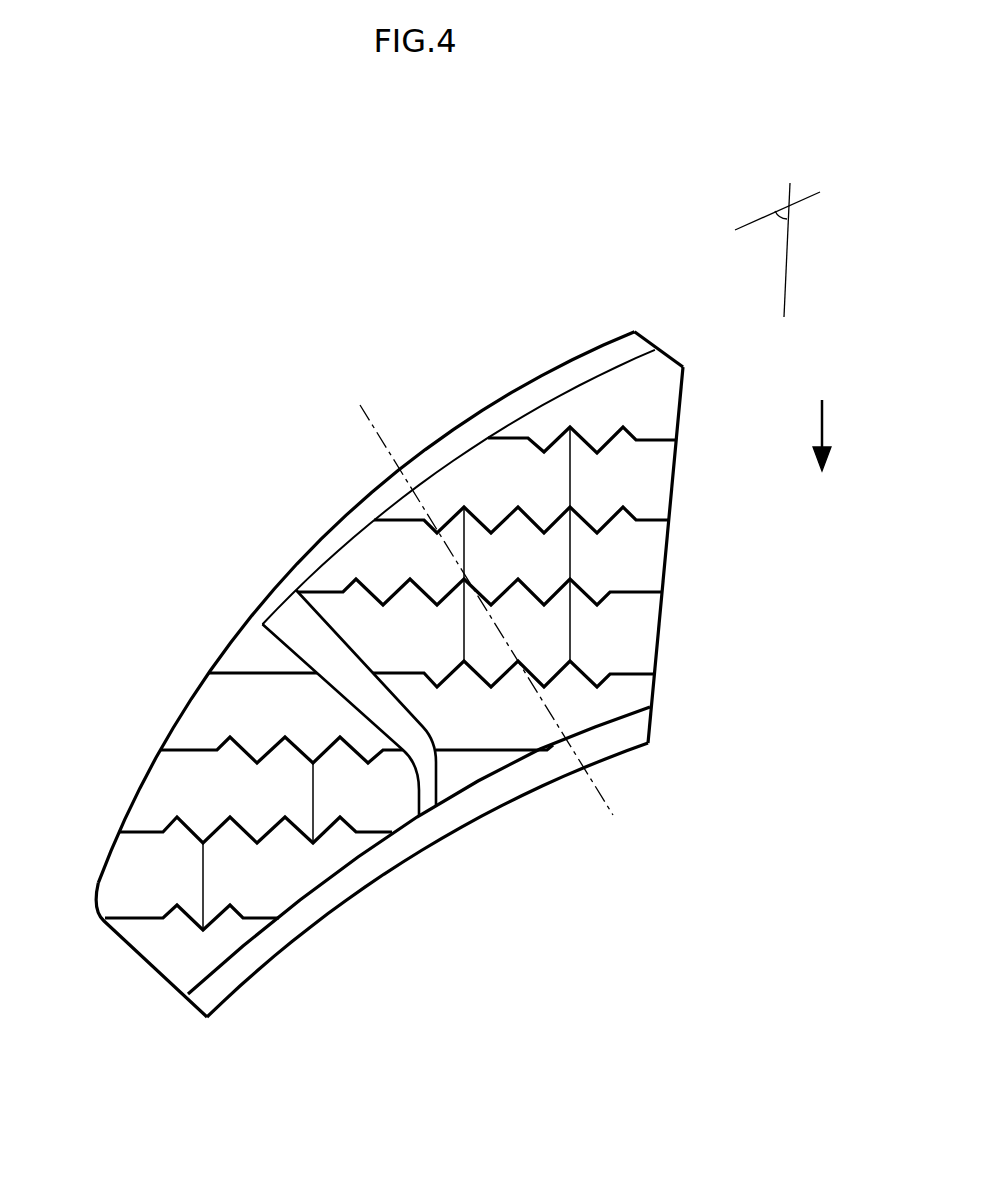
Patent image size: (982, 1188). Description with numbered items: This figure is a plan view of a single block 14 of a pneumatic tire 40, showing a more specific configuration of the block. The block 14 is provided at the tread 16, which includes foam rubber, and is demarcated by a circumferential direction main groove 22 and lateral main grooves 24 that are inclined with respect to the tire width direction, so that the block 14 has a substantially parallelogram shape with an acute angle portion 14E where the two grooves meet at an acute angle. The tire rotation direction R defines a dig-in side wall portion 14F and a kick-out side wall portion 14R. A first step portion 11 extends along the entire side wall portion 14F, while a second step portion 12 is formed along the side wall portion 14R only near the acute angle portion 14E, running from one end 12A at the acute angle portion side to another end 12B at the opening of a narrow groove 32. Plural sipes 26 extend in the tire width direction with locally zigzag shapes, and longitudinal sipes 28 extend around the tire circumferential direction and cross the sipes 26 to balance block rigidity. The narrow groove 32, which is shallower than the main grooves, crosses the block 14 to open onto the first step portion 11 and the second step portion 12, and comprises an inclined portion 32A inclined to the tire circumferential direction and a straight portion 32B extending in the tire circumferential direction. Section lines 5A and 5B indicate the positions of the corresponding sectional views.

The first step portion 11 is at (376, 878).
The second step portion 12 is at (530, 390).
The one end of the second step portion 12A is at (632, 332).
The other end of the second step portion 12B is at (280, 603).
The block 14 is at (686, 407).
The acute angle portion 14E is at (682, 360).
The side wall portion 14F is at (328, 918).
The side wall portion 14R is at (482, 408).
The tread 16 is at (432, 261).
The circumferential direction main groove 22 is at (96, 945).
The lateral main groove 24 is at (307, 492).
The sipe 26 is at (612, 437).
The longitudinal sipe 28 is at (568, 487).
The narrow groove 32 is at (323, 650).
The inclined portion 32A is at (300, 648).
The straight portion 32B is at (436, 780).
The pneumatic tire 40 is at (210, 288).
The section line 5A is at (380, 422).
The section line 5B is at (359, 344).
The tire rotation direction R is at (822, 453).